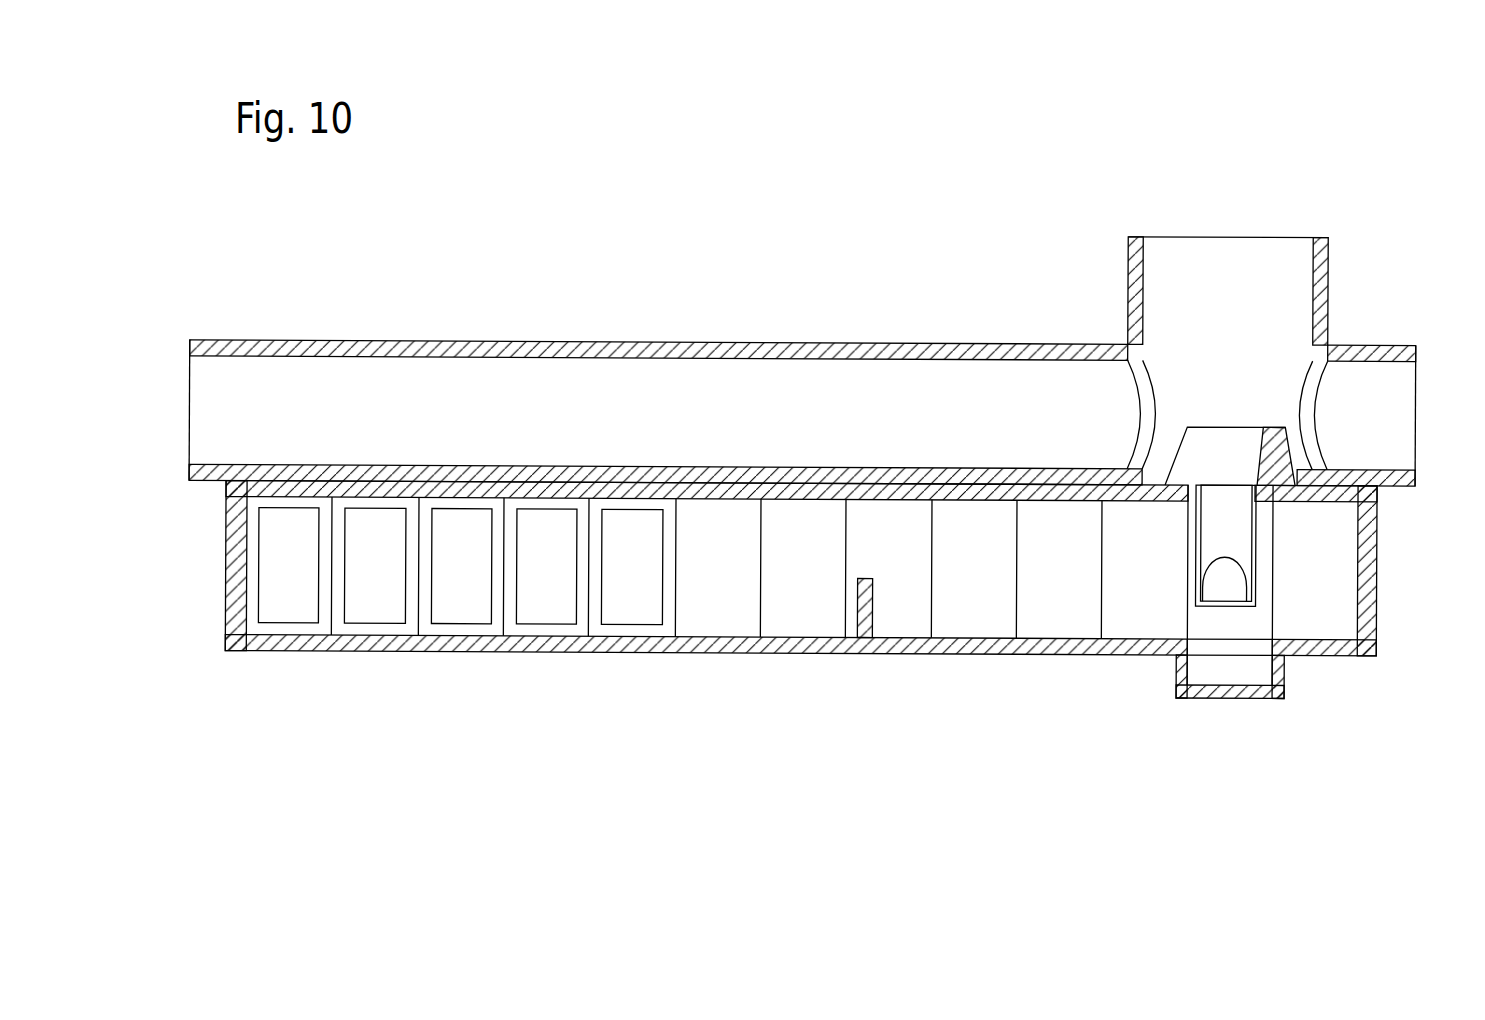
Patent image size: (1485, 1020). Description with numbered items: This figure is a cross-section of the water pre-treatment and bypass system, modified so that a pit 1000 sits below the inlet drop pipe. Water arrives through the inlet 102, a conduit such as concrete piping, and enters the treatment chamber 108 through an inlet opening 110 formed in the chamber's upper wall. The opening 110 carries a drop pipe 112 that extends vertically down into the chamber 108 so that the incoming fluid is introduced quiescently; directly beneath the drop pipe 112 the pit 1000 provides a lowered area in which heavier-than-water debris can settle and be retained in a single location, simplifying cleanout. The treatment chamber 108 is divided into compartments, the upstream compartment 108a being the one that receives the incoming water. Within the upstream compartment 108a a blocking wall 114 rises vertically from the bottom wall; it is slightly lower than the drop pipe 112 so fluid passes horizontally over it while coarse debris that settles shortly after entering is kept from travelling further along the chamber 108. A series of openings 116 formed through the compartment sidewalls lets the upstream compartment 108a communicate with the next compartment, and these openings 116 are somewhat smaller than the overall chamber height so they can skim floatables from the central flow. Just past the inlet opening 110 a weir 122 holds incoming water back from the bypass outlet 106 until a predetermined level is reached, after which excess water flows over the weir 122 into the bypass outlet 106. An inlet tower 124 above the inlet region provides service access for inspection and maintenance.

The inlet 102 is at (200, 408).
The bypass outlet 106 is at (1403, 390).
The treatment chamber 108 is at (722, 653).
The upstream compartment 108a is at (974, 569).
The inlet opening 110 is at (1228, 520).
The drop pipe 112 is at (1243, 552).
The blocking wall 114 is at (872, 603).
The openings 116 is at (292, 606).
The weir 122 is at (1228, 440).
The inlet tower 124 is at (1127, 272).
The pit 1000 is at (1247, 680).